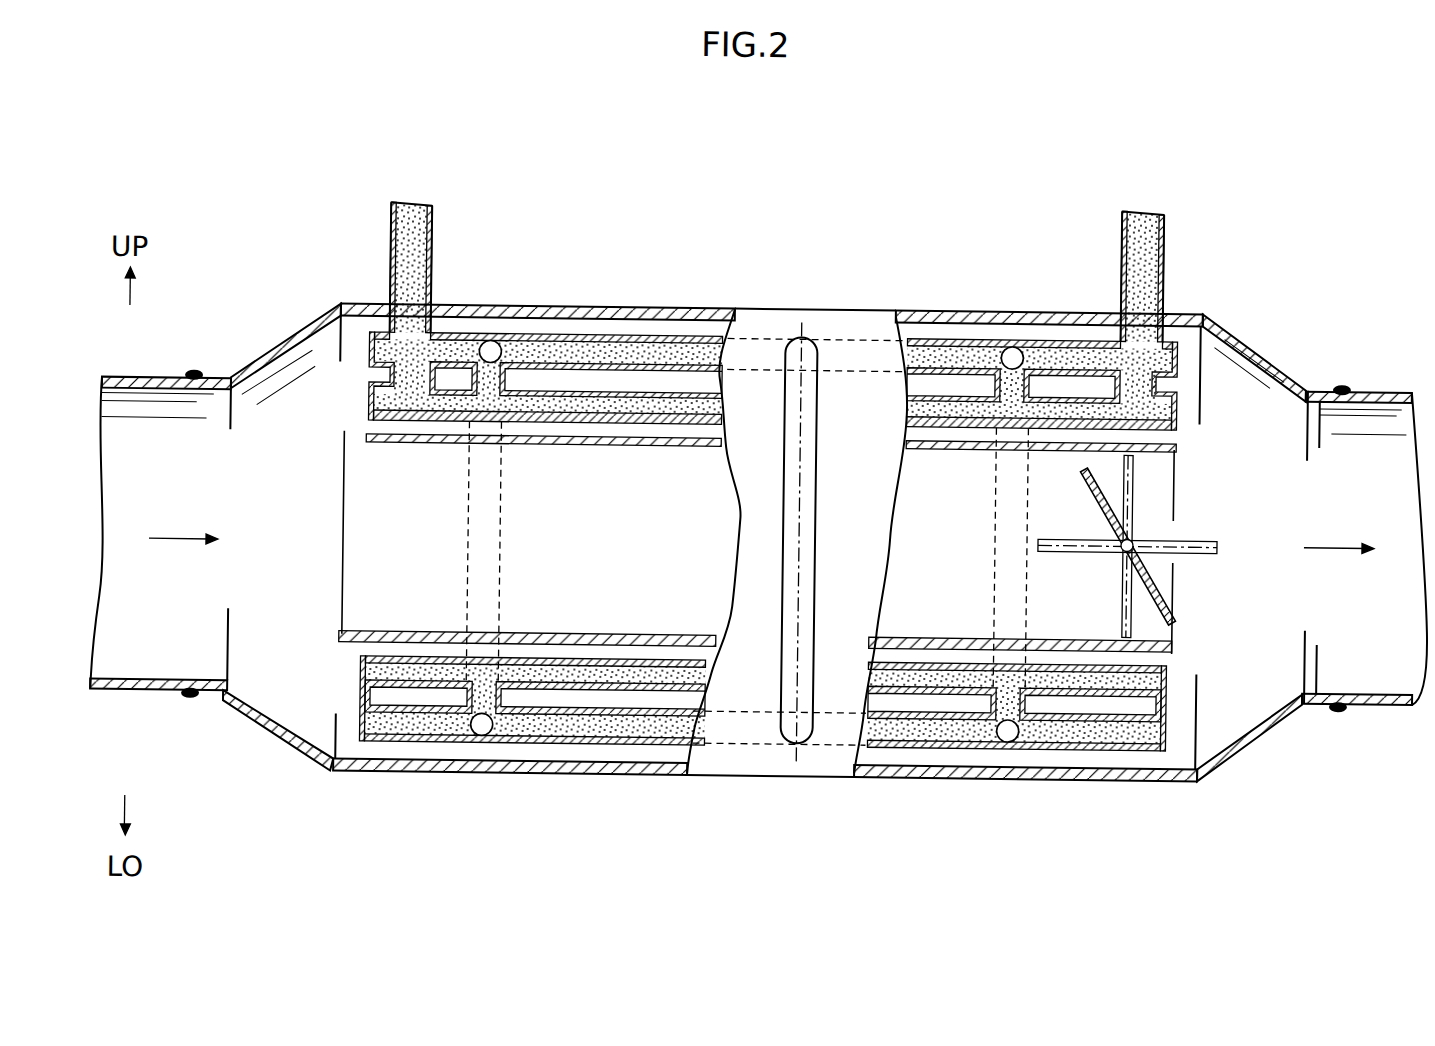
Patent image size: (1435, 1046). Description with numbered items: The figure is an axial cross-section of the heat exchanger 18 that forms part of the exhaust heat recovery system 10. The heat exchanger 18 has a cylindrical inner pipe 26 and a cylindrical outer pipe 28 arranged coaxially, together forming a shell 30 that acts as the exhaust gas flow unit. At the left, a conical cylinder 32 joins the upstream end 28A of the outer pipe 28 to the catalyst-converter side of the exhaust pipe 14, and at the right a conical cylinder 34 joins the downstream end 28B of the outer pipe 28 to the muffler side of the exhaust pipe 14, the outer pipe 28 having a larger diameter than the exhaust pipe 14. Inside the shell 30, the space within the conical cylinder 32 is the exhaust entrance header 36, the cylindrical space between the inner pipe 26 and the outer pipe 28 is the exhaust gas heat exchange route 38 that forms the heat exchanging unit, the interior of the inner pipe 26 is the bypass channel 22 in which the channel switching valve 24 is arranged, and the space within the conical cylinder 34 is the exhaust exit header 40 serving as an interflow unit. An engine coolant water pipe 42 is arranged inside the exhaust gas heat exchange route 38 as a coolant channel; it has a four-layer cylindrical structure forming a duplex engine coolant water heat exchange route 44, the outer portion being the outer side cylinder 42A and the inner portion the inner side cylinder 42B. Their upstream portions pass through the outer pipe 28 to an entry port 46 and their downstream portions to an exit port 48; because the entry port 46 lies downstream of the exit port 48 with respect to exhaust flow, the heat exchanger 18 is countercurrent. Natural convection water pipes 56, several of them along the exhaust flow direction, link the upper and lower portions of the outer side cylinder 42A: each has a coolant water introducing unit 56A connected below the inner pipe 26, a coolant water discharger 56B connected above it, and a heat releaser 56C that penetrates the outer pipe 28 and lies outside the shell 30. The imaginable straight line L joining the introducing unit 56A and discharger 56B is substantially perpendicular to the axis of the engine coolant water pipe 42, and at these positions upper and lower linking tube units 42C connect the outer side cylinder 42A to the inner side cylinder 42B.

The exhaust heat recovery system 10 is at (1109, 127).
The exhaust pipe 14 is at (152, 694).
The heat exchanger 18 is at (917, 166).
The bypass channel 22 is at (595, 564).
The channel switching valve 24 is at (1092, 492).
The inner pipe 26 is at (685, 440).
The outer pipe 28 is at (794, 533).
The upstream end of the outer pipe 28A is at (336, 777).
The downstream end of the outer pipe 28B is at (1207, 290).
The shell 30 is at (794, 298).
The conical cylinder 32 is at (267, 344).
The conical cylinder 34 is at (1276, 346).
The exhaust entrance header 36 is at (268, 549).
The exhaust gas heat exchange route 38 is at (964, 428).
The exhaust exit header 40 is at (1270, 520).
The engine coolant water pipe 42 is at (770, 540).
The outer side cylinder 42A is at (631, 358).
The inner side cylinder 42B is at (658, 403).
The linking tube unit 42C is at (1025, 375).
The engine coolant water heat exchange route 44 is at (583, 350).
The entry port 46 is at (1161, 226).
The exit port 48 is at (424, 232).
The natural convection water pipe 56 is at (702, 541).
The coolant water introducing unit 56A is at (488, 738).
The coolant water discharger 56B is at (488, 340).
The heat releaser 56C is at (467, 527).
The imaginable straight line L is at (795, 749).